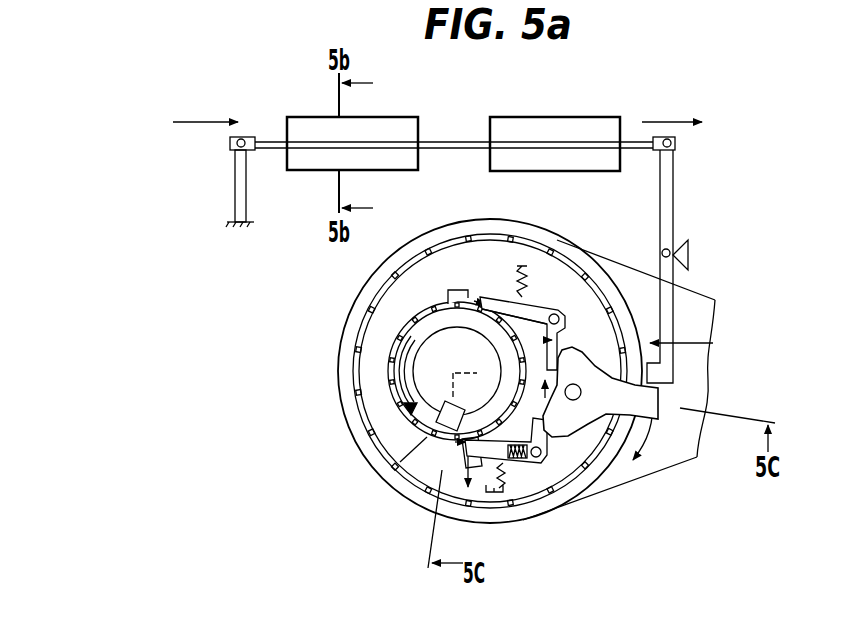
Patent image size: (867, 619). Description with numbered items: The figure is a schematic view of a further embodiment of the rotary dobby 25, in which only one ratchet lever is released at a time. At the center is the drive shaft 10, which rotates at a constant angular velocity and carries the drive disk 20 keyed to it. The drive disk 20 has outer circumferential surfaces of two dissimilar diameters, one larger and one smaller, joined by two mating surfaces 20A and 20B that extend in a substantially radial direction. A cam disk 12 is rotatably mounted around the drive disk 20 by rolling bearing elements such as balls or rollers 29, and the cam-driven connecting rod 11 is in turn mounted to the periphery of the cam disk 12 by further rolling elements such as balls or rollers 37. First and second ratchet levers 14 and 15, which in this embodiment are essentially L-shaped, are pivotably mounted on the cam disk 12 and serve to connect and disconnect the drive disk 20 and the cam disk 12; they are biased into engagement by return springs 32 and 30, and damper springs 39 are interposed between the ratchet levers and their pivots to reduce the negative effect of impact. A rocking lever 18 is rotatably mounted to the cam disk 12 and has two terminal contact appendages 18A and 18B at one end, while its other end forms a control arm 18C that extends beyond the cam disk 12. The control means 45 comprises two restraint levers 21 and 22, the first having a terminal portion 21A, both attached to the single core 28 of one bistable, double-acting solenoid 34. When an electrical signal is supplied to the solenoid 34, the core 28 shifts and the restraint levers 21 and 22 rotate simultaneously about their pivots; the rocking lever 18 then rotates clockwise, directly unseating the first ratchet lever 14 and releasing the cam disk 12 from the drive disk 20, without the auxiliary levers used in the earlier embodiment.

The drive shaft 10 is at (422, 385).
The cam-driven connecting rod 11 is at (695, 305).
The cam disk 12 is at (427, 467).
The first ratchet lever 14 is at (545, 441).
The second ratchet lever 15 is at (548, 300).
The rocking lever 18 is at (598, 396).
The terminal contact appendage 18A is at (502, 390).
The terminal contact appendage 18B is at (513, 310).
The control arm 18C is at (662, 422).
The drive disk 20 is at (430, 323).
The mating surface 20A is at (458, 290).
The mating surface 20B is at (410, 452).
The restraint lever 21 is at (672, 197).
The terminal portion 21A is at (680, 383).
The restraint lever 22 is at (240, 187).
The rotary dobby 25 is at (260, 362).
The core 28 is at (268, 143).
The rolling bearing elements 29 is at (390, 400).
The return spring 30 is at (522, 266).
The return spring 32 is at (496, 490).
The bistable double-acting solenoid 34 is at (408, 123).
The rolling elements 37 is at (375, 292).
The damper spring 39 is at (527, 460).
The control means 45 is at (717, 212).